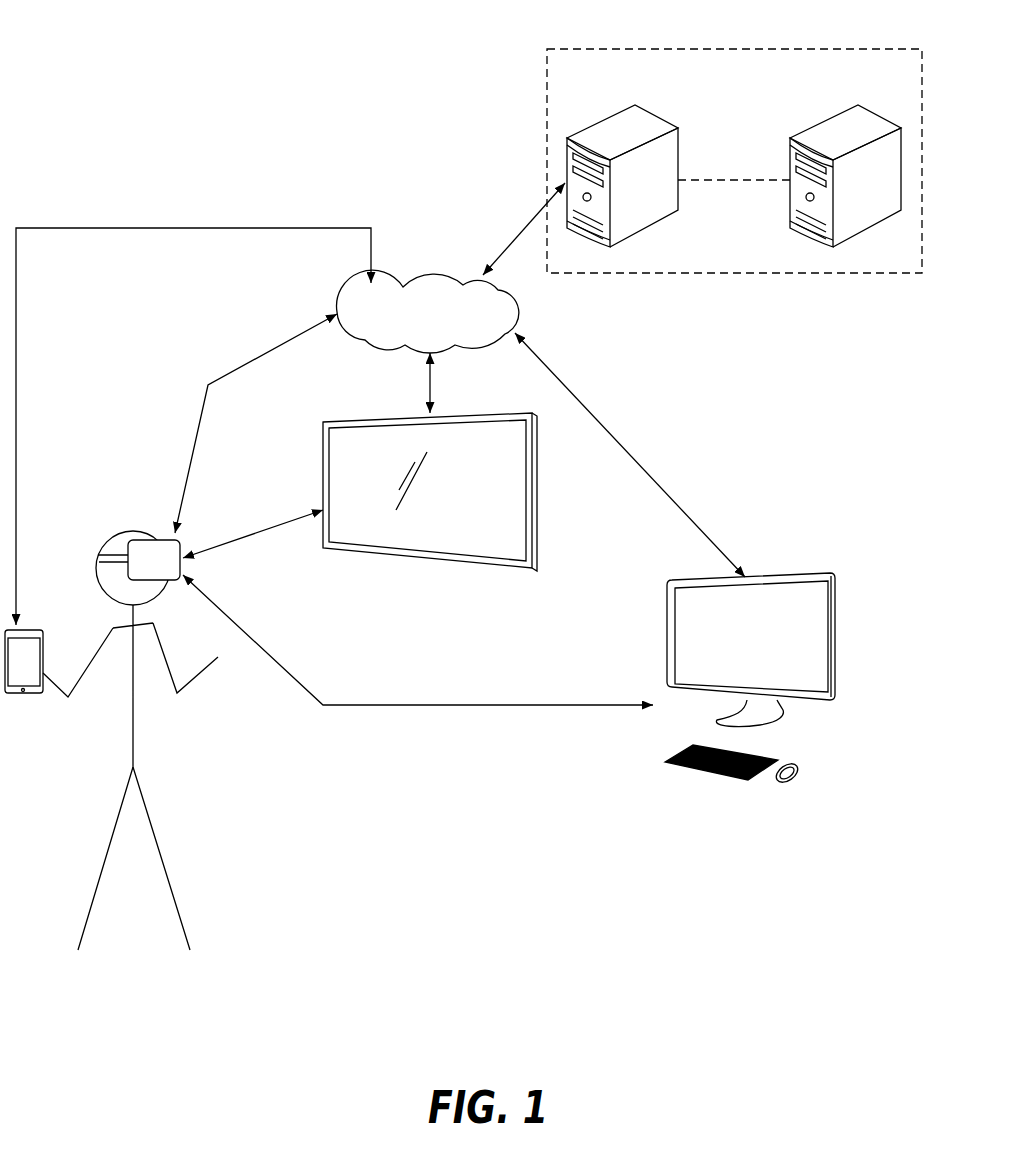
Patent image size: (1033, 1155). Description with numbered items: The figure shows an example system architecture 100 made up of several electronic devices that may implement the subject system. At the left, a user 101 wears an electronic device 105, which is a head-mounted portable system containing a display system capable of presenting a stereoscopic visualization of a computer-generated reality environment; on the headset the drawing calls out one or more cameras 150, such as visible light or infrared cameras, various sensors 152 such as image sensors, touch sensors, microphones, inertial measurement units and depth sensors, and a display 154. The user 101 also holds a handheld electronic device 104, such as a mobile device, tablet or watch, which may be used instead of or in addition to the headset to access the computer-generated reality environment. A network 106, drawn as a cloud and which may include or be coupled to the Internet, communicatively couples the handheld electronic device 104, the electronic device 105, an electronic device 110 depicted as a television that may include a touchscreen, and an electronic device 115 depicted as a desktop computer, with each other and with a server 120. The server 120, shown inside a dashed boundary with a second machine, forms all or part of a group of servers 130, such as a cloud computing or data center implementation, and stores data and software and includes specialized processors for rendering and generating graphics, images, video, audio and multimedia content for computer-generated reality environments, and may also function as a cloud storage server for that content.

The system architecture 100 is at (138, 17).
The user 101 is at (132, 722).
The handheld electronic device 104 is at (28, 630).
The electronic device 105 is at (158, 540).
The network 106 is at (428, 274).
The electronic device 110 is at (420, 562).
The electronic device 115 is at (744, 788).
The server 120 is at (600, 121).
The group of servers 130 is at (545, 82).
The camera 150 is at (130, 540).
The sensors 152 is at (182, 540).
The display 154 is at (173, 582).